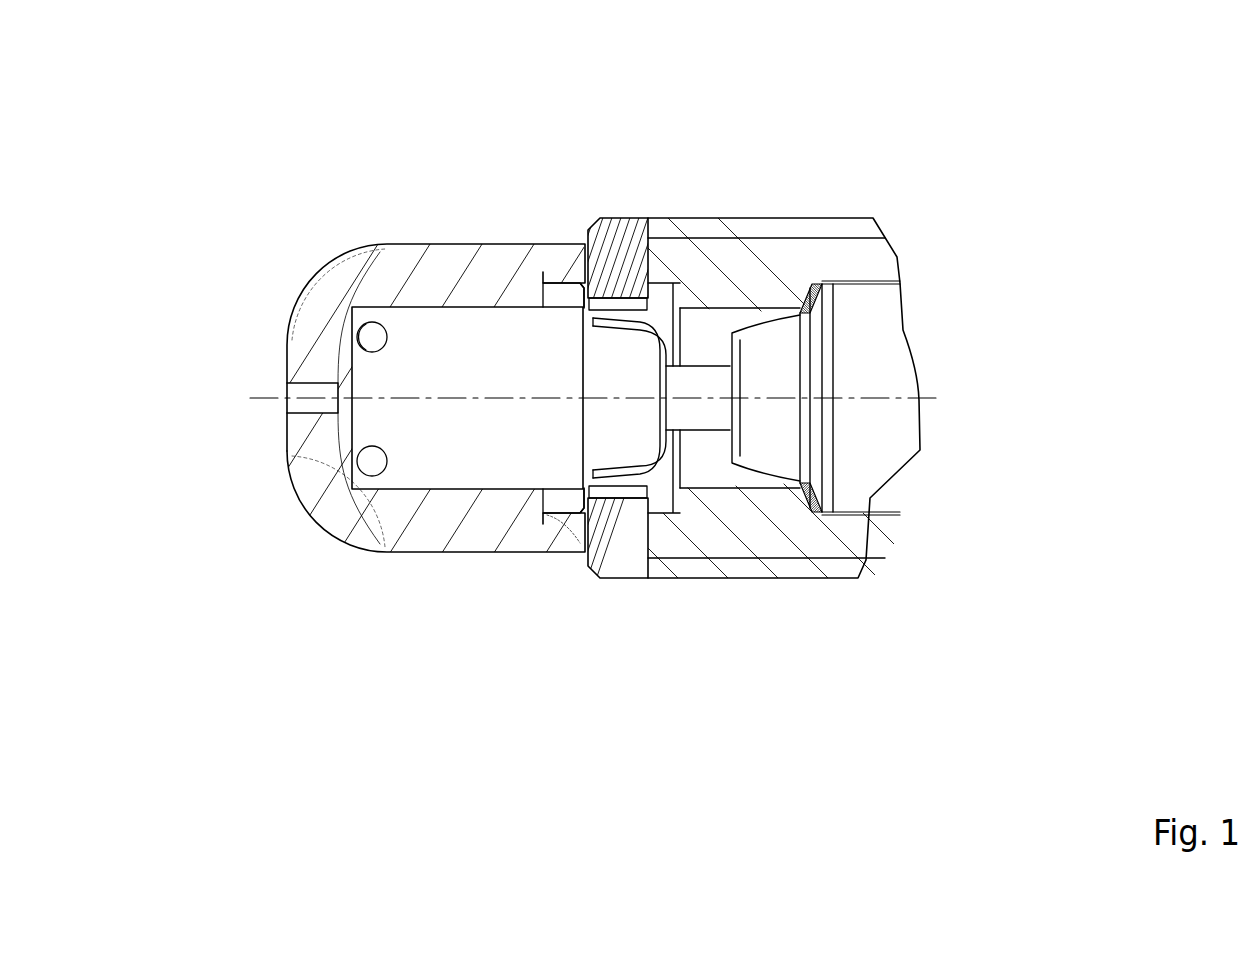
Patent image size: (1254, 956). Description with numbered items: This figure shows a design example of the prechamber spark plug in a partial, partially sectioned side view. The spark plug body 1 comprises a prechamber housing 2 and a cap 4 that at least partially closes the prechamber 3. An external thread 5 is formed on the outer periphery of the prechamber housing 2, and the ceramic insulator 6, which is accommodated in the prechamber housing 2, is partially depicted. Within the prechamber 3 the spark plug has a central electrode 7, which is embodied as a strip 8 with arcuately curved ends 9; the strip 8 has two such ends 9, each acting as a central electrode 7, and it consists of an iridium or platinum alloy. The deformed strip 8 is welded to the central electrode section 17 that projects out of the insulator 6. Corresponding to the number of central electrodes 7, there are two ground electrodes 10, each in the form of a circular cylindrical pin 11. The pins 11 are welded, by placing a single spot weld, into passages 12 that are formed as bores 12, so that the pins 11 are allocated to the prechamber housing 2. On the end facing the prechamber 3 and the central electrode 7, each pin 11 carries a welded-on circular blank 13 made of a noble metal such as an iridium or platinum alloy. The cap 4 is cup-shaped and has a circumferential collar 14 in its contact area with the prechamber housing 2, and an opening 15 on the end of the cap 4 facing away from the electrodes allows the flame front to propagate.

The spark plug body 1 is at (652, 130).
The prechamber housing 2 is at (840, 540).
The prechamber 3 is at (378, 417).
The cap 4 is at (372, 287).
The external thread 5 is at (855, 232).
The insulator 6 is at (866, 332).
The central electrode 7 is at (556, 457).
The strip 8 is at (740, 398).
The ends 9 is at (598, 342).
The ground electrodes 10 is at (587, 416).
The pin 11 is at (620, 533).
The passages 12 is at (581, 536).
The circular blank 13 is at (617, 488).
The circumferential collar 14 is at (563, 297).
The opening 15 is at (268, 384).
The central electrode section 17 is at (683, 390).